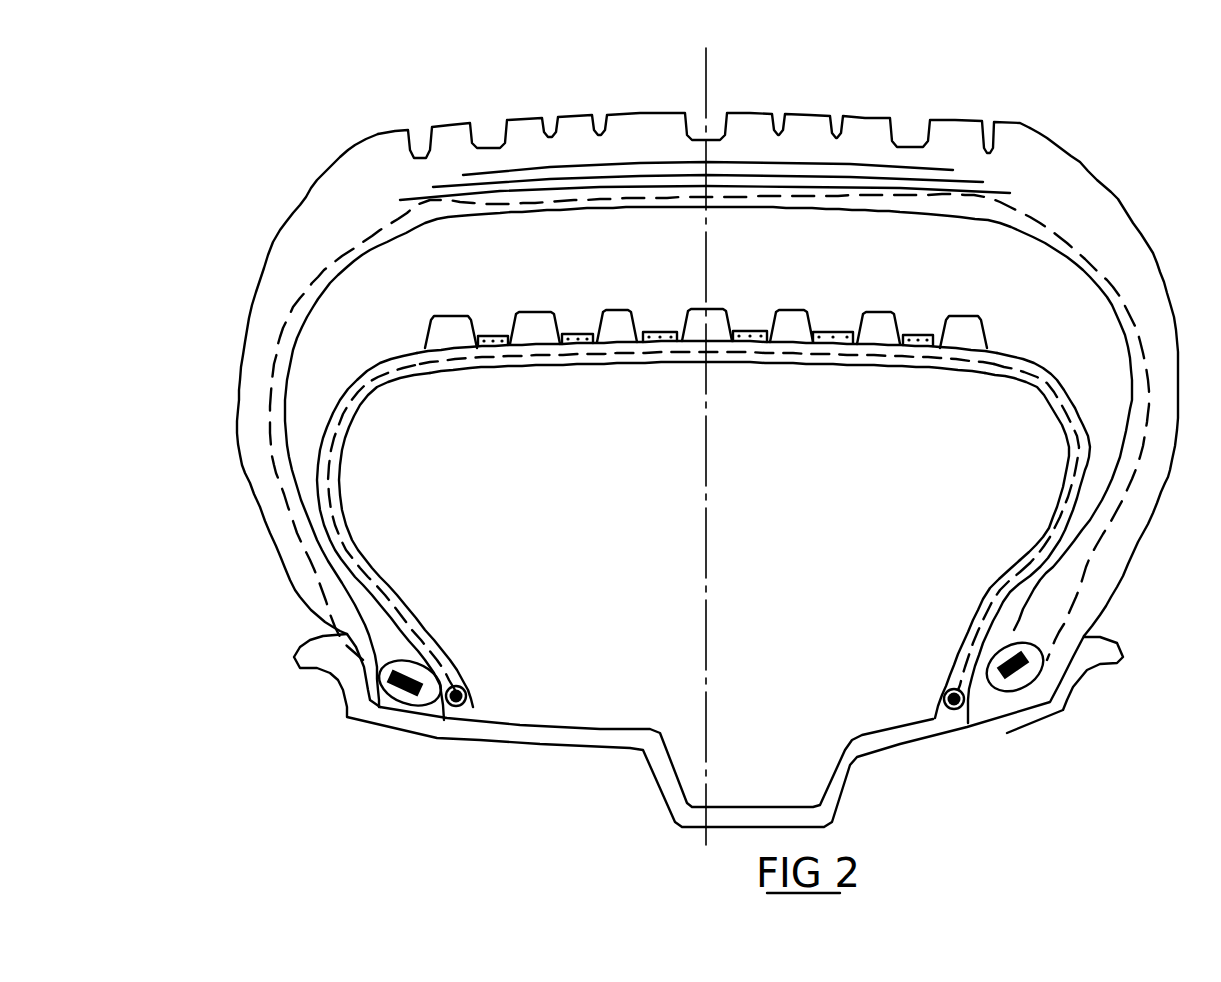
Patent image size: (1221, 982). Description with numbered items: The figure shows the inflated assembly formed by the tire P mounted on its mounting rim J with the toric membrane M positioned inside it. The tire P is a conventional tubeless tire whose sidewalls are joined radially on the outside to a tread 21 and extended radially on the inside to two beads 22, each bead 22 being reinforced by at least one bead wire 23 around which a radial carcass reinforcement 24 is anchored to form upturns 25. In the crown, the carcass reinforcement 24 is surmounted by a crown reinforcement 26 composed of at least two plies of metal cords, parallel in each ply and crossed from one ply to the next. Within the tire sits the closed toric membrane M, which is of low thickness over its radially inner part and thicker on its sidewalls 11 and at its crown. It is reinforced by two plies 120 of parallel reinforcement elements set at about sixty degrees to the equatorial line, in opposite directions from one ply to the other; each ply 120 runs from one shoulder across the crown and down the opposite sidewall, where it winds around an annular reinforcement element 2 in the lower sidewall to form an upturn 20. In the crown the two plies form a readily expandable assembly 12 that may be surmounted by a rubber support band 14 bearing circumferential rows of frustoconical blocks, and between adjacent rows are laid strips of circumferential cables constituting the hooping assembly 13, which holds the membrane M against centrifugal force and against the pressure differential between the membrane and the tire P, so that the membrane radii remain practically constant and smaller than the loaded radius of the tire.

The tire P is at (330, 153).
The tread 21 is at (802, 148).
The radial carcass reinforcement 24 is at (297, 303).
The crown reinforcement 26 is at (567, 180).
The hooping assembly 13 is at (507, 330).
The rubber support band 14 is at (783, 327).
The toric membrane M is at (920, 327).
The assembly of the two crown plies 12 is at (588, 350).
The membrane sidewall 11 is at (330, 484).
The reinforcement ply 120 is at (1083, 447).
The upturn 25 is at (333, 613).
The bead wire 23 is at (425, 685).
The upturn 20 is at (1000, 615).
The bead 22 is at (1107, 583).
The annular reinforcement element 2 is at (947, 703).
The mounting rim J is at (1070, 705).